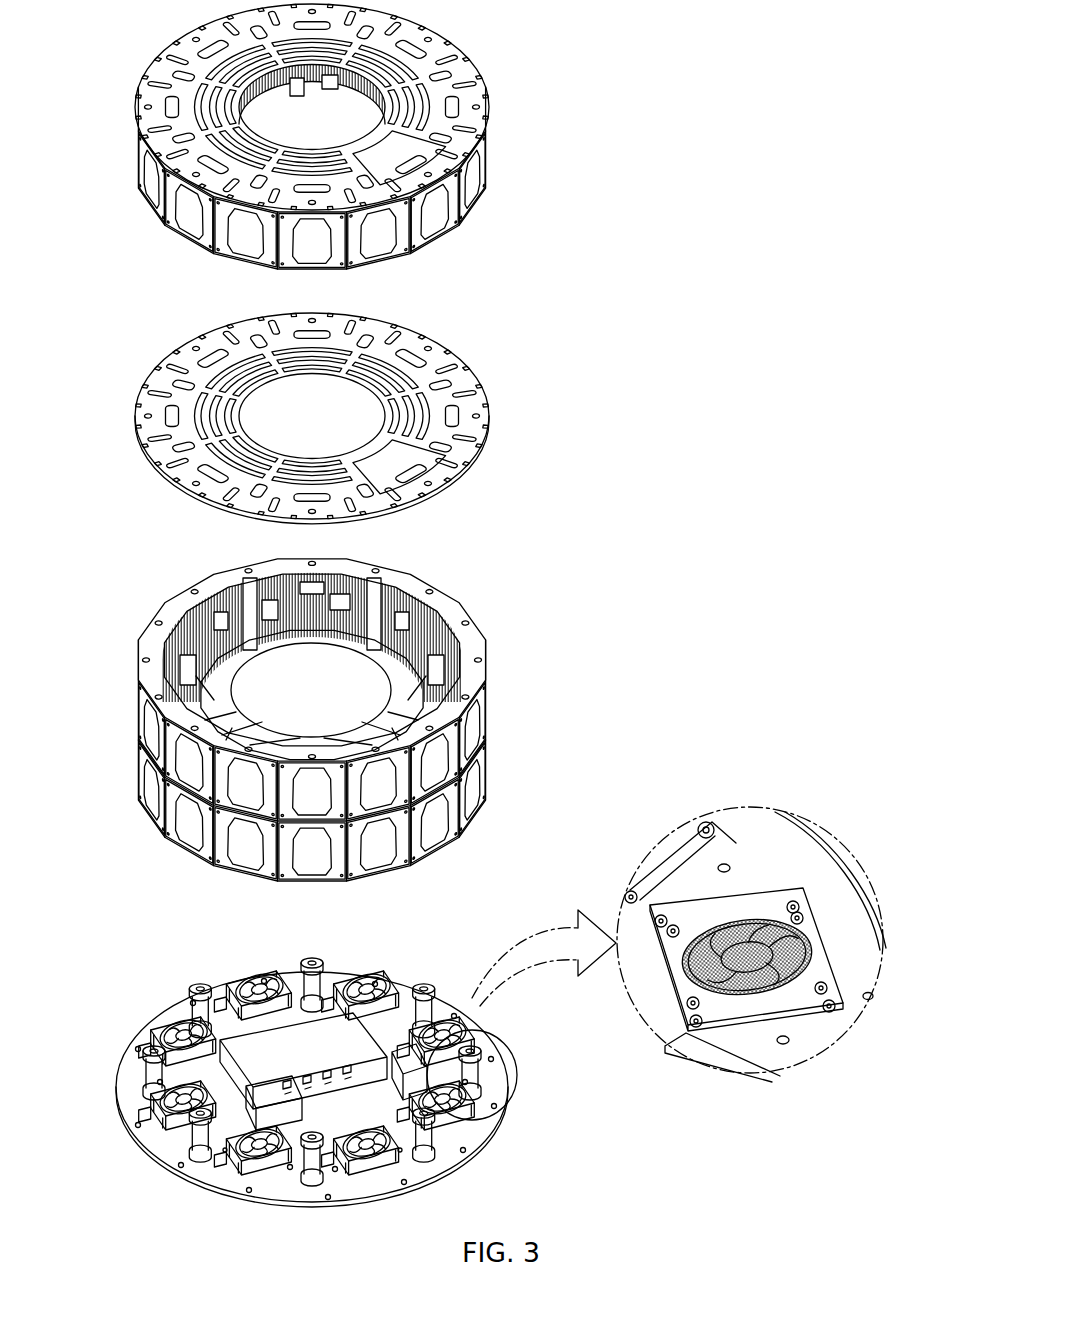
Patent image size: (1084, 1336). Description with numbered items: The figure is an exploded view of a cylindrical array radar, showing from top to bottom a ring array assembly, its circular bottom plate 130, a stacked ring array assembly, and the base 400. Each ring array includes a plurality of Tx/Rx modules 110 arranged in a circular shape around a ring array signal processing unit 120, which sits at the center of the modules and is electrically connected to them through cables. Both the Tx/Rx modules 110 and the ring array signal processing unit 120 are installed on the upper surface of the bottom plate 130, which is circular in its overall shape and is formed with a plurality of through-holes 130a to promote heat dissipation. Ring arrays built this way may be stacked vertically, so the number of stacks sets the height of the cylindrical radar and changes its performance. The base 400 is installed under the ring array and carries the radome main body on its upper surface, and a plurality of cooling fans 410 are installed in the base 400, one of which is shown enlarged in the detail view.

The Tx/Rx module 110 is at (473, 179).
The ring array signal processing unit 120 is at (327, 118).
The bottom plate 130 is at (488, 418).
The through-hole 130a is at (373, 462).
The base 400 is at (507, 1107).
The cooling fan 410 is at (470, 1037).